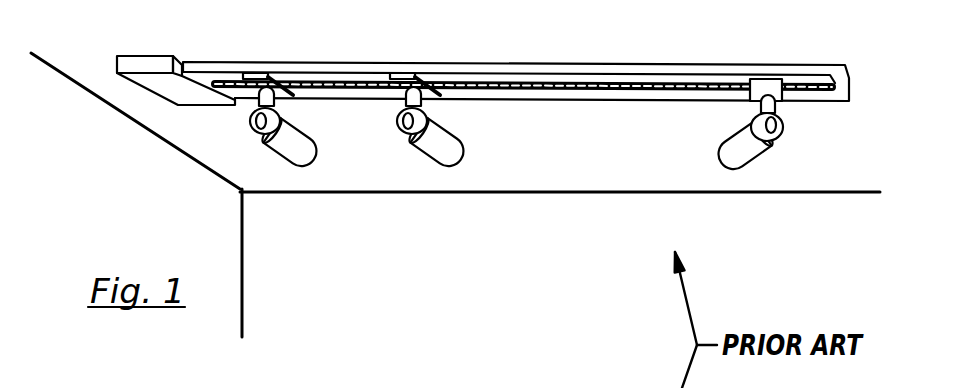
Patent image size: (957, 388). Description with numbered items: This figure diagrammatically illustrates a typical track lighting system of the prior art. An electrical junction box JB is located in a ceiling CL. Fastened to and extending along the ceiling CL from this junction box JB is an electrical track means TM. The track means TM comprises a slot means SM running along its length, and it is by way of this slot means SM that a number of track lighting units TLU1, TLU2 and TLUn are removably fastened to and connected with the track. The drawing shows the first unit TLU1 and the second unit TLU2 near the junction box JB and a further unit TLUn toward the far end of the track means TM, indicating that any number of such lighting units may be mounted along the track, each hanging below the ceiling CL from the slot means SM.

The electrical junction box JB is at (163, 100).
The electrical track means TM is at (492, 63).
The slot means SM is at (573, 88).
The track lighting unit TLU1 is at (311, 152).
The track lighting unit TLU2 is at (458, 152).
The track lighting unit TLUn is at (722, 140).
The ceiling CL is at (584, 150).